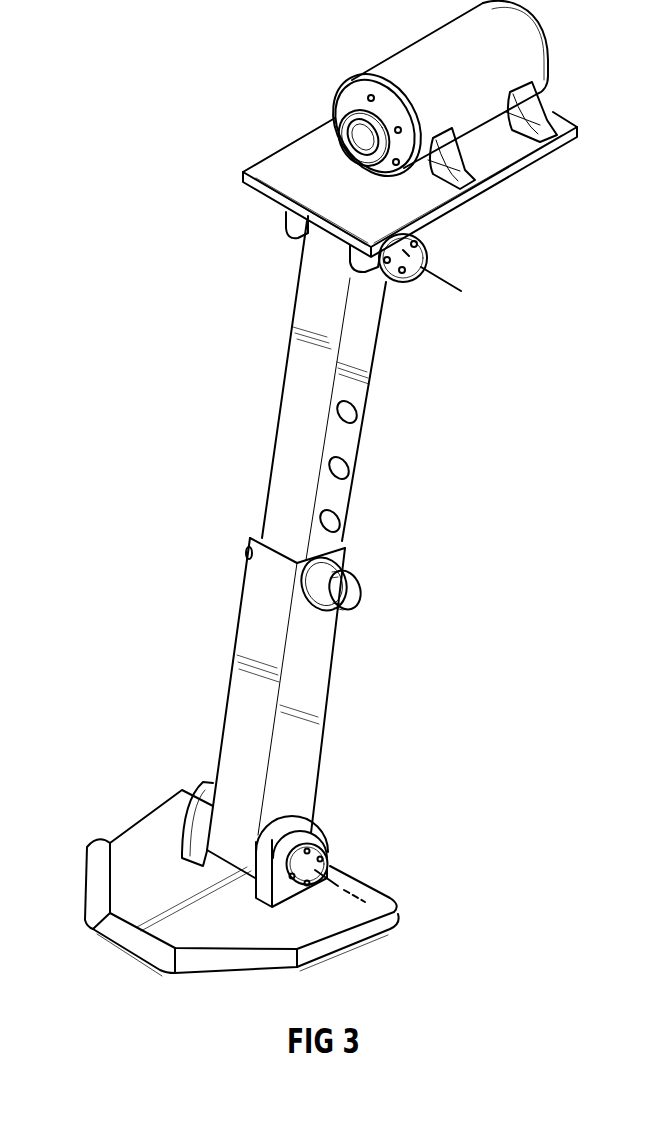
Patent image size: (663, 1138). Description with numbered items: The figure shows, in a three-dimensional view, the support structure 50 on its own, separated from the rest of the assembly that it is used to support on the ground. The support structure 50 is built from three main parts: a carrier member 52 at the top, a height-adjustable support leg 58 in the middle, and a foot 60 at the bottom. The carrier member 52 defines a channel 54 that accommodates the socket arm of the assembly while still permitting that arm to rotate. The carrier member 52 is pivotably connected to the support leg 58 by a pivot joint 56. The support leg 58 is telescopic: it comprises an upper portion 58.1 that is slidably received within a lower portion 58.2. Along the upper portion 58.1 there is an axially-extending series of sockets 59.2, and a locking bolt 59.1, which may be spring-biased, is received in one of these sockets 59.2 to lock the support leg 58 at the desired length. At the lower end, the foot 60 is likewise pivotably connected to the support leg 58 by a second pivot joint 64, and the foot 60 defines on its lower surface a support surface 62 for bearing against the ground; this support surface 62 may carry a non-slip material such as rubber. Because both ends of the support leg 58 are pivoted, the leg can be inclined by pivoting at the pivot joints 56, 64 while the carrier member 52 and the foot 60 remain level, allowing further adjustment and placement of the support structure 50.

The support structure 50 is at (101, 317).
The carrier member 52 is at (322, 91).
The channel 54 is at (328, 129).
The pivot joint 56 is at (422, 264).
The support leg 58 is at (427, 845).
The upper portion 58.1 is at (300, 290).
The lower portion 58.2 is at (235, 703).
The locking bolt 59.1 is at (317, 590).
The sockets 59.2 is at (308, 509).
The foot 60 is at (370, 887).
The support surface 62 is at (377, 947).
The pivot joint 64 is at (327, 840).